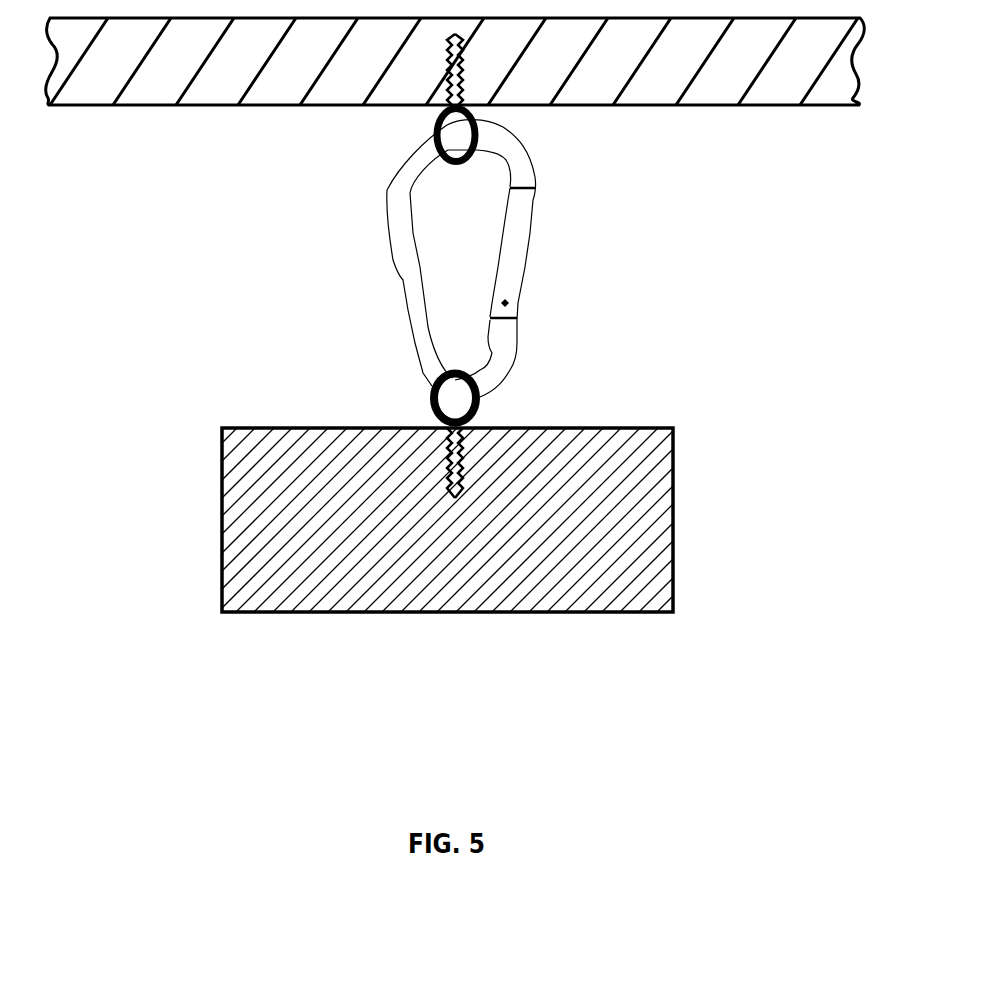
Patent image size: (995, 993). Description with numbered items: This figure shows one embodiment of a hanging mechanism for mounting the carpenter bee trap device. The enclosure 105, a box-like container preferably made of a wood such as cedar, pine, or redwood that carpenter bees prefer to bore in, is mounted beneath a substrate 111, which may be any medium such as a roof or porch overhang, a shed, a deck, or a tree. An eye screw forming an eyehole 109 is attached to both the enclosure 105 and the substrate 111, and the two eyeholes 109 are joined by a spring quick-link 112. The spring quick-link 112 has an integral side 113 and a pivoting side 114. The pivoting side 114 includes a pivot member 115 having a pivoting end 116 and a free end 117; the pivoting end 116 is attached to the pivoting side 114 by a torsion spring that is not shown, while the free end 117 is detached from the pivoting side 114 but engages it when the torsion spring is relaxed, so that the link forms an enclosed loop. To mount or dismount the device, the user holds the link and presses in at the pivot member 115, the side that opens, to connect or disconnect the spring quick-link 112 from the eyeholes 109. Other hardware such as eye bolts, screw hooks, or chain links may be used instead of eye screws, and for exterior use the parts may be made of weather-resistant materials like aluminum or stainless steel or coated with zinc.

The enclosure 105 is at (212, 519).
The eyehole 109 is at (416, 138).
The substrate 111 is at (121, 116).
The spring quick-link 112 is at (486, 258).
The integral side 113 is at (388, 262).
The pivoting side 114 is at (527, 166).
The pivot member 115 is at (522, 232).
The pivoting end 116 is at (520, 312).
The free end 117 is at (527, 203).